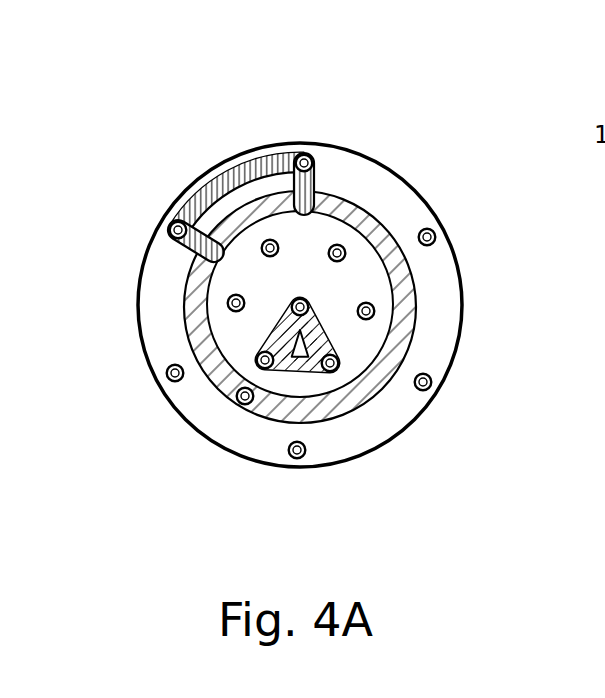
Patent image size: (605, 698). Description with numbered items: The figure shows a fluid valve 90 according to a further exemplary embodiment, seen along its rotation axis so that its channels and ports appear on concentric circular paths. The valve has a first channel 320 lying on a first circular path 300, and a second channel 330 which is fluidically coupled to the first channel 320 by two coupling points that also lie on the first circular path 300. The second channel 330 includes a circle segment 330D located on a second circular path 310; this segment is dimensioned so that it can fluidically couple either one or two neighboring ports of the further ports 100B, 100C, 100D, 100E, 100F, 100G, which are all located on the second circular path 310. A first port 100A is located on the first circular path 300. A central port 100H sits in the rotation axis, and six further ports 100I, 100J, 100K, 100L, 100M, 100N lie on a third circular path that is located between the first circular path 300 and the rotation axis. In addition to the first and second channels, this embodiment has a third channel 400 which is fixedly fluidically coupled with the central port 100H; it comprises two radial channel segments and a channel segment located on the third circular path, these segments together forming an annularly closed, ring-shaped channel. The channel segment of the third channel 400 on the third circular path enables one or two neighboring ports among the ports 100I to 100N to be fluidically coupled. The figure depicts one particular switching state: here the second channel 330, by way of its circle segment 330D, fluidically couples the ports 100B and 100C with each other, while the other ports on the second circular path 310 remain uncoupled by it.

The fluid valve 90 is at (419, 86).
The first circular path 300 is at (185, 280).
The second circular path 310 is at (164, 252).
The first channel 320 is at (393, 232).
The second channel 330 is at (268, 170).
The circle segment 330D is at (206, 203).
The third channel 400 is at (313, 368).
The first port 100A is at (240, 404).
The port 100B is at (304, 154).
The port 100C is at (171, 223).
The port 100D is at (171, 381).
The port 100E is at (296, 459).
The port 100F is at (428, 389).
The port 100G is at (436, 238).
The central port 100H is at (301, 298).
The port 100I is at (264, 370).
The port 100J is at (335, 373).
The port 100K is at (375, 314).
The port 100L is at (340, 246).
The port 100M is at (266, 242).
The port 100N is at (228, 304).